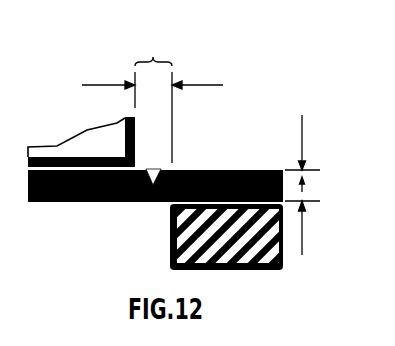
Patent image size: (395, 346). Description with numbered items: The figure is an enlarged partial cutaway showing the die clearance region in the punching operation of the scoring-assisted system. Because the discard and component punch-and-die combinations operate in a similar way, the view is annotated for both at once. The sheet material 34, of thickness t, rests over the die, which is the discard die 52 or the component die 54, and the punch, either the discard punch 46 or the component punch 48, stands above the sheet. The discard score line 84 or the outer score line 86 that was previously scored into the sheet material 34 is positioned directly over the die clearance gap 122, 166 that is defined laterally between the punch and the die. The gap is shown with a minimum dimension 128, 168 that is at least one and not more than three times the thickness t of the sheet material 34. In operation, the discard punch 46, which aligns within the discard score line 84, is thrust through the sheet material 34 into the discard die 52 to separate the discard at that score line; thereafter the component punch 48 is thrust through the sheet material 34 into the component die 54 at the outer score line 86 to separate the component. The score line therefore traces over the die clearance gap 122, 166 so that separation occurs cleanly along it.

The sheet material 34 is at (62, 203).
The discard punch 46 is at (76, 130).
The component punch 48 is at (85, 136).
The discard score line 84 is at (196, 153).
The outer score line 86 is at (152, 182).
The discard die 52 is at (238, 248).
The component die 54 is at (223, 268).
The die clearance gap 122 is at (200, 88).
The die clearance gap 166 is at (153, 57).
The minimum dimension 128 is at (201, 84).
The minimum dimension 168 is at (201, 84).